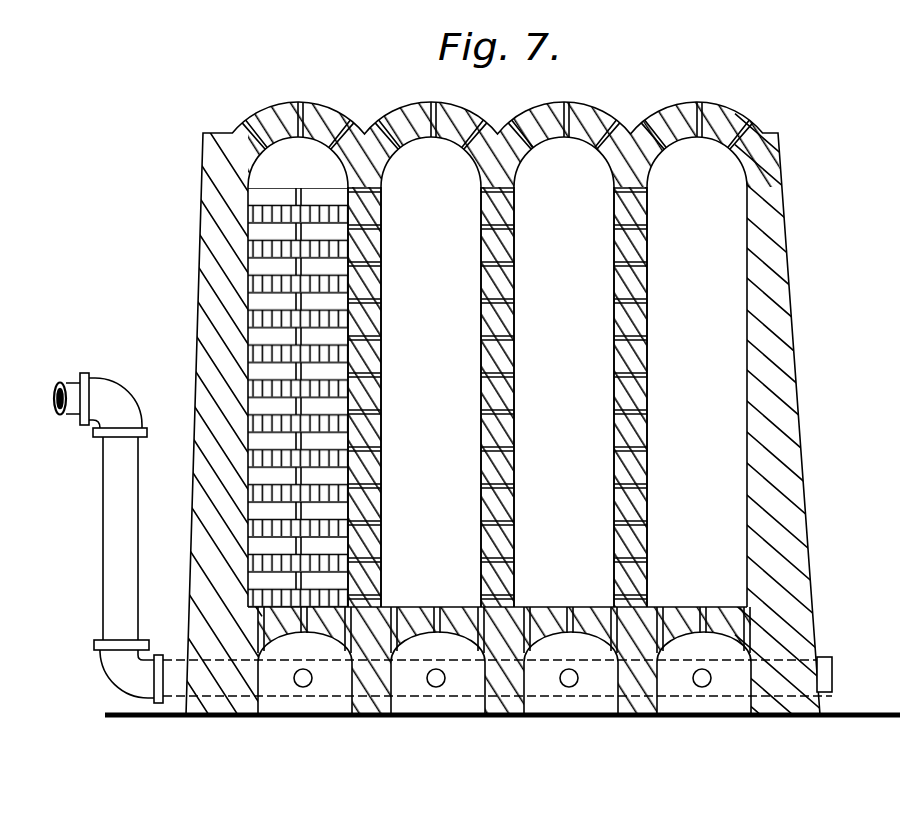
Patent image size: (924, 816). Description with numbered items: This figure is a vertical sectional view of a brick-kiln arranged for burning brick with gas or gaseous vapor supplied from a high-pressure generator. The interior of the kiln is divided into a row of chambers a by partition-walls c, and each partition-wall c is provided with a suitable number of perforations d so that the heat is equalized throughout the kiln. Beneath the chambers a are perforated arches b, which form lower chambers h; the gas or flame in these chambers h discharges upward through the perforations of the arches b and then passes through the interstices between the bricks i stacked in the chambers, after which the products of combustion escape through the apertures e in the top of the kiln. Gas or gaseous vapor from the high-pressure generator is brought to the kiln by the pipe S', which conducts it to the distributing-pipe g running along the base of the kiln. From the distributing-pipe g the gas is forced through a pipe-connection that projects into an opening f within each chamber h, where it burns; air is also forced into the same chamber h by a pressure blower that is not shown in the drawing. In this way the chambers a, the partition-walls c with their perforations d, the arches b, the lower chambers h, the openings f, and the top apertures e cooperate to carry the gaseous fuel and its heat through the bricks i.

The chambers a is at (497, 372).
The perforated arches b is at (497, 594).
The partition-walls c is at (652, 317).
The perforations d is at (657, 447).
The apertures e is at (497, 112).
The opening f is at (693, 680).
The distributing-pipe g is at (845, 683).
The chambers h is at (515, 683).
The bricks i is at (298, 397).
The pipe S' is at (108, 538).